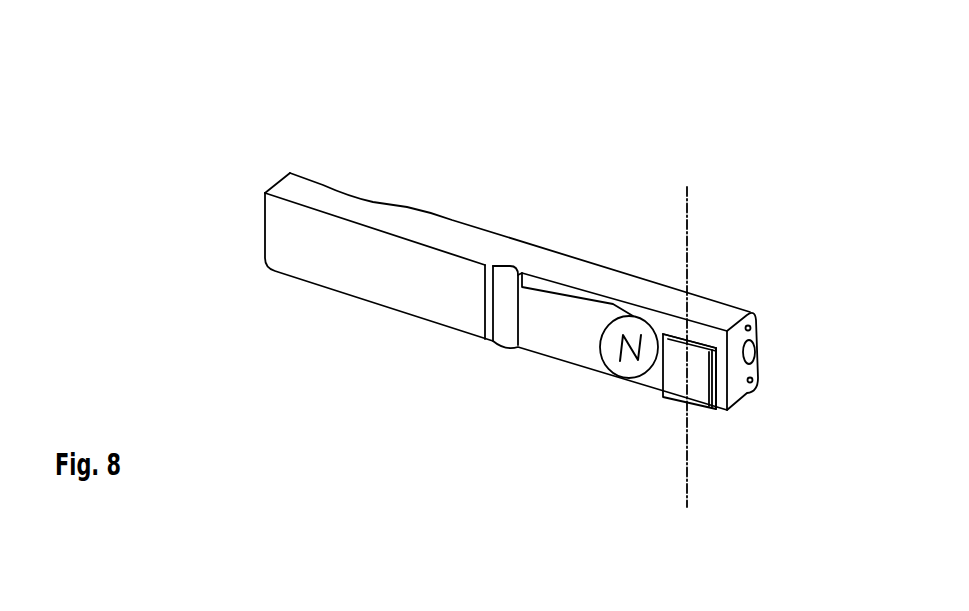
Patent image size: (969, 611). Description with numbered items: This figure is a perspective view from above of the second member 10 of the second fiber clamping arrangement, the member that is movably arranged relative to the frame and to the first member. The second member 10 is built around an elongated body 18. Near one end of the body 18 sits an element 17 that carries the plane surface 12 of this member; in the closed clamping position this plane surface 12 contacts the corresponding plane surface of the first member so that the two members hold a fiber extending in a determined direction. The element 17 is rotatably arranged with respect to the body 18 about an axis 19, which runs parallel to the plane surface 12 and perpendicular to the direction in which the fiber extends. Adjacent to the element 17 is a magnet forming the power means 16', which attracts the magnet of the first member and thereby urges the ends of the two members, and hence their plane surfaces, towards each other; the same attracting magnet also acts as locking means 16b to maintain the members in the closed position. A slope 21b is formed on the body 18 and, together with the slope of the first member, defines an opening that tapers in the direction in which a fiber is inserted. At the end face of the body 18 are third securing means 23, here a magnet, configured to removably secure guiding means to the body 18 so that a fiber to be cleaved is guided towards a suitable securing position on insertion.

The second member 10 is at (647, 212).
The body 18 is at (452, 232).
The slope 21b is at (563, 292).
The power means 16' is at (696, 291).
The locking means 16b is at (647, 347).
The plane surface 12 is at (673, 382).
The element 17 is at (705, 362).
The third securing means 23 is at (755, 351).
The axis 19 is at (690, 220).